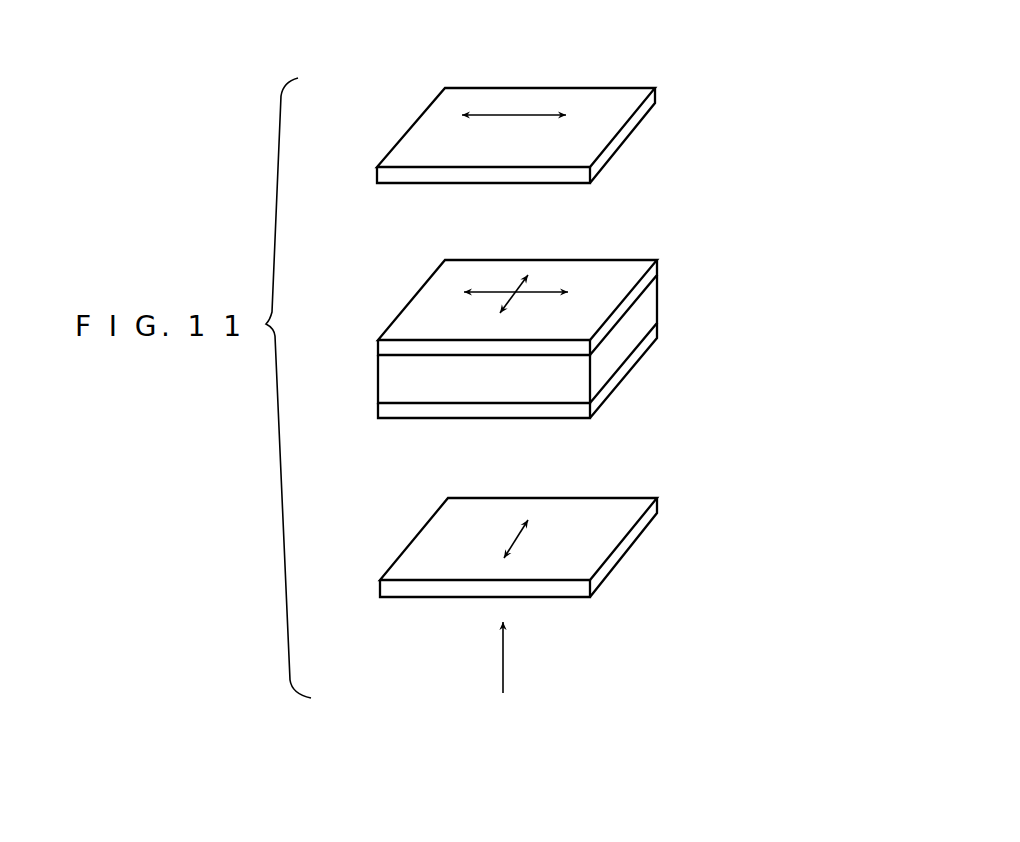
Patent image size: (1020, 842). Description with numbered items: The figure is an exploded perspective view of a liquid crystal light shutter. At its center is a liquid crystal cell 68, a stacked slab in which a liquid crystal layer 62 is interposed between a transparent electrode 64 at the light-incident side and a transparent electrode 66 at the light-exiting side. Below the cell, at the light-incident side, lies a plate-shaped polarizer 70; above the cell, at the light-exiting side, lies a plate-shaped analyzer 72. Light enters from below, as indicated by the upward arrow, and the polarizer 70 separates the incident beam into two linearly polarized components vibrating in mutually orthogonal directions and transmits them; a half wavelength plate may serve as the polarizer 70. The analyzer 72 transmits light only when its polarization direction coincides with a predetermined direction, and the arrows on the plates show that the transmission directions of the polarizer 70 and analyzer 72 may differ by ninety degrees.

The liquid crystal layer 62 is at (395, 377).
The transparent electrode 64 is at (583, 412).
The transparent electrode 66 is at (637, 265).
The liquid crystal cell 68 is at (538, 331).
The polarizer 70 is at (613, 540).
The analyzer 72 is at (640, 120).